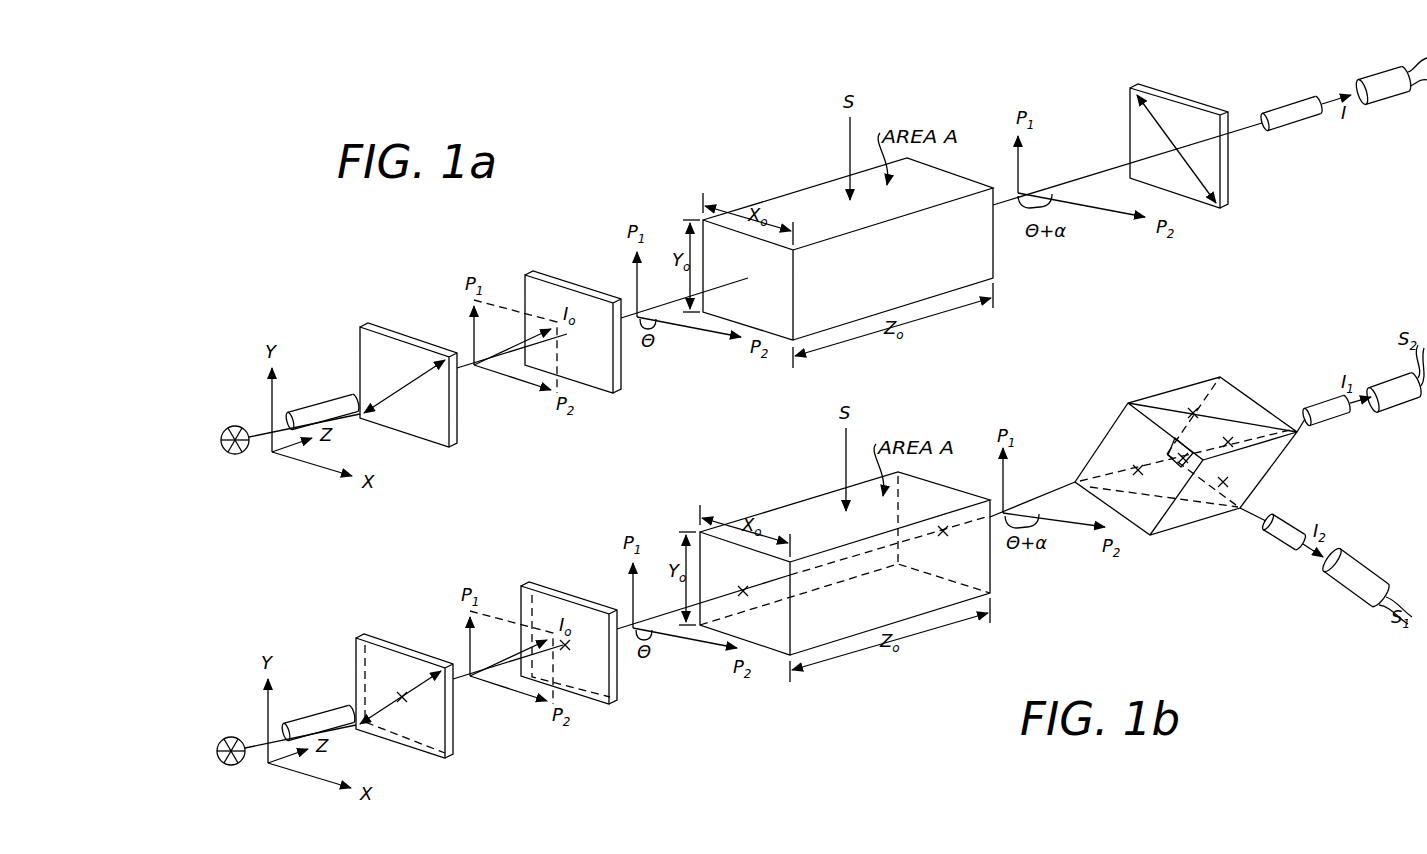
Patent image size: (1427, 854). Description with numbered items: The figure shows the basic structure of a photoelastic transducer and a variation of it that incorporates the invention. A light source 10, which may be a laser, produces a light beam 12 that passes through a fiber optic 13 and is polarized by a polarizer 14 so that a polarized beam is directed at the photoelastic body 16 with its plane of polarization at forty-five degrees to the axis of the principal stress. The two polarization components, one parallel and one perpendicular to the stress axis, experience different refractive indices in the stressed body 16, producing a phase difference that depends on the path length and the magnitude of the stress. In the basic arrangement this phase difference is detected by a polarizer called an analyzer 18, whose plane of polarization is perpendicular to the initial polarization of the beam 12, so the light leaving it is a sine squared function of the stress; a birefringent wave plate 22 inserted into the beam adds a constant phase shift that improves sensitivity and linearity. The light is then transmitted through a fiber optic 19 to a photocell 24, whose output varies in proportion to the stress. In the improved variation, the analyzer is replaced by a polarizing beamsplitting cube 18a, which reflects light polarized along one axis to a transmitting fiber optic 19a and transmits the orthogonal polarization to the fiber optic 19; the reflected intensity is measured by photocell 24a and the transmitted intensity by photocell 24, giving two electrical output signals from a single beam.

In FIG. 1a, the light source 10 is at (241, 453).
In FIG. 1b, the light source 10 is at (243, 765).
In FIG. 1a, the light beam 12 is at (257, 424).
In FIG. 1b, the light beam 12 is at (284, 718).
In FIG. 1a, the fiber optic 13 is at (333, 400).
In FIG. 1b, the fiber optic 13 is at (318, 708).
In FIG. 1a, the polarizer 14 is at (457, 428).
In FIG. 1b, the polarizer 14 is at (432, 698).
In FIG. 1a, the photoelastic body 16 is at (835, 330).
In FIG. 1b, the photoelastic body 16 is at (845, 589).
In FIG. 1a, the analyzer 18 is at (1230, 175).
In FIG. 1b, the polarizing beamsplitting cube 18a is at (1195, 392).
In FIG. 1a, the fiber optic 19 is at (1294, 106).
In FIG. 1b, the fiber optic 19 is at (1320, 400).
In FIG. 1b, the transmitting fiber optic 19a is at (1283, 536).
In FIG. 1b, the birefringent wave plate 22 is at (598, 647).
In FIG. 1a, the photocell 24 is at (1386, 80).
In FIG. 1b, the photocell 24 is at (1406, 400).
In FIG. 1b, the photocell 24a is at (1373, 574).